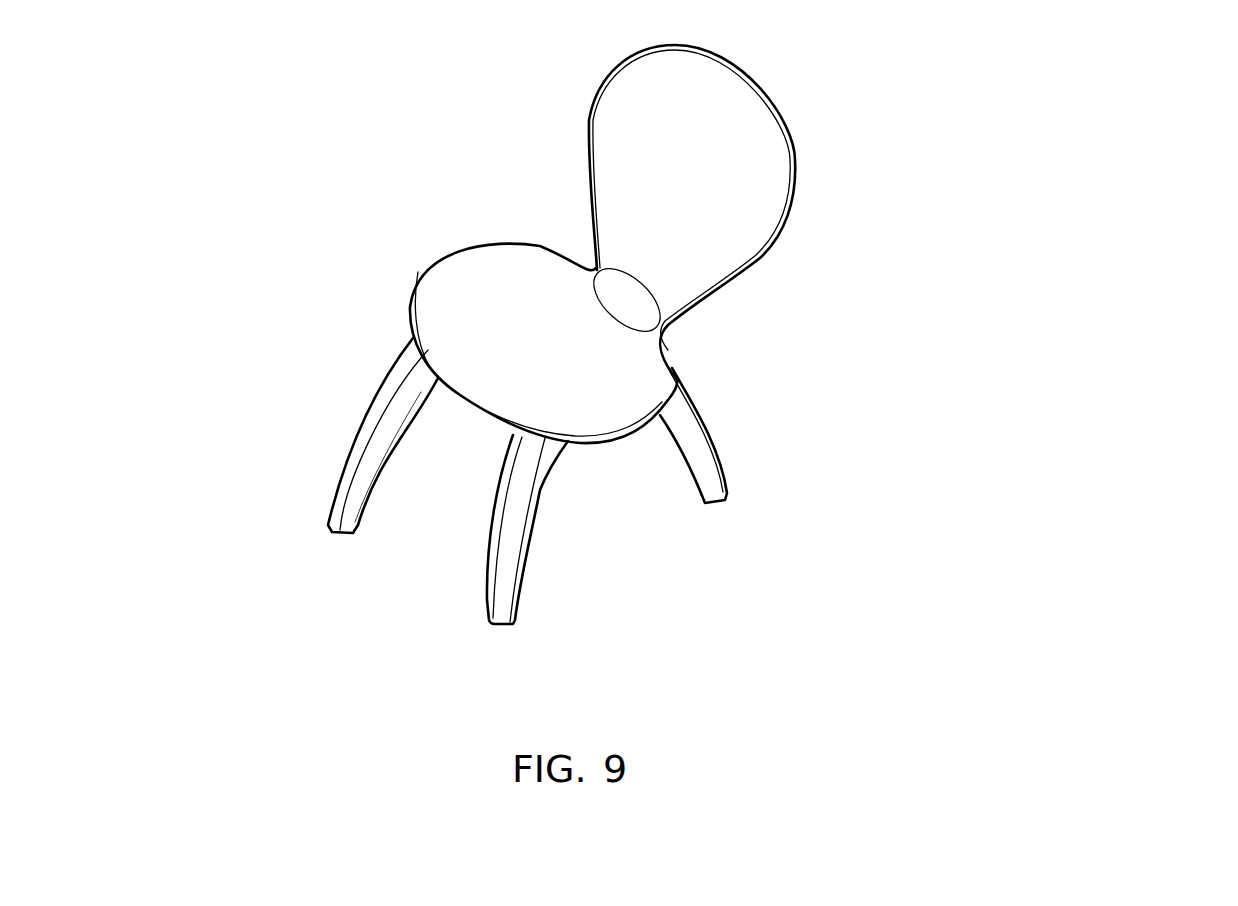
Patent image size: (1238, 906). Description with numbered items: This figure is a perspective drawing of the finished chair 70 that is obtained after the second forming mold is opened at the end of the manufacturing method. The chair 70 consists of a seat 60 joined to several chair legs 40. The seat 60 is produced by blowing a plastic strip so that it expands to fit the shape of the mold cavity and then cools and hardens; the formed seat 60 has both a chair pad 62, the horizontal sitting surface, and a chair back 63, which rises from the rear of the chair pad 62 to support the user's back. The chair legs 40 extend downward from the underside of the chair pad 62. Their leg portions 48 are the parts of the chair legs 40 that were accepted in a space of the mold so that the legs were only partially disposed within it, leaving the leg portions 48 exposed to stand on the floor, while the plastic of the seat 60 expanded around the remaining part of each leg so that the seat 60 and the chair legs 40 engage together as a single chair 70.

The chair 70 is at (1135, 178).
The seat 60 is at (808, 215).
The chair back 63 is at (622, 165).
The chair pad 62 is at (463, 318).
The chair legs 40 is at (747, 448).
The leg portions 48 is at (503, 535).